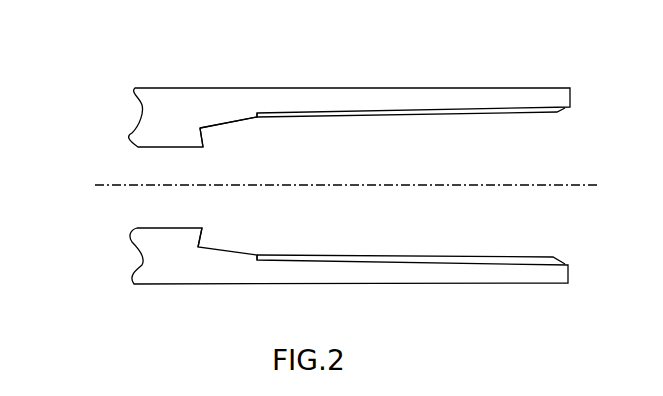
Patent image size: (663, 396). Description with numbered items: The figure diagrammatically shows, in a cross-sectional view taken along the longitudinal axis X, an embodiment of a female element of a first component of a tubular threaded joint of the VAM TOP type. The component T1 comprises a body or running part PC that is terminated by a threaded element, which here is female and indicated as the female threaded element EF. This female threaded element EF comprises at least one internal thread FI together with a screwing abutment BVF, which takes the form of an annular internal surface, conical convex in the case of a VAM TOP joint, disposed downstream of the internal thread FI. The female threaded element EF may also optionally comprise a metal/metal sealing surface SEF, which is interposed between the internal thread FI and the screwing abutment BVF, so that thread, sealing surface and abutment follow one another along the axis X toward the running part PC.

The running part PC is at (140, 102).
The metal/metal sealing surface SEF is at (220, 111).
The female threaded element EF is at (453, 88).
The screwing abutment BVF is at (211, 219).
The internal thread FI is at (416, 245).
The longitudinal axis X is at (344, 186).
The component T1 is at (106, 262).